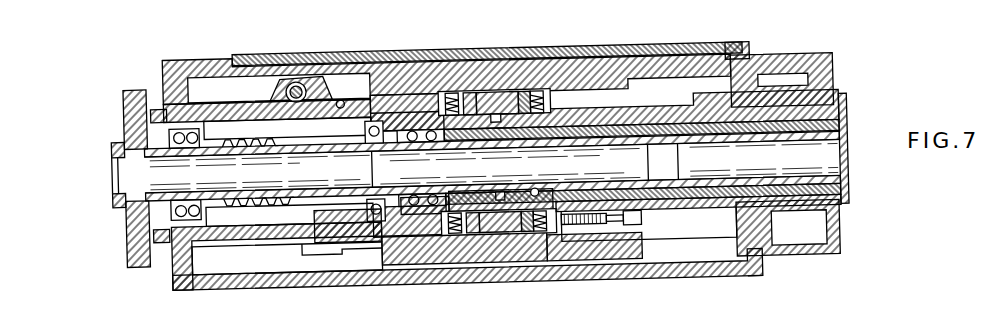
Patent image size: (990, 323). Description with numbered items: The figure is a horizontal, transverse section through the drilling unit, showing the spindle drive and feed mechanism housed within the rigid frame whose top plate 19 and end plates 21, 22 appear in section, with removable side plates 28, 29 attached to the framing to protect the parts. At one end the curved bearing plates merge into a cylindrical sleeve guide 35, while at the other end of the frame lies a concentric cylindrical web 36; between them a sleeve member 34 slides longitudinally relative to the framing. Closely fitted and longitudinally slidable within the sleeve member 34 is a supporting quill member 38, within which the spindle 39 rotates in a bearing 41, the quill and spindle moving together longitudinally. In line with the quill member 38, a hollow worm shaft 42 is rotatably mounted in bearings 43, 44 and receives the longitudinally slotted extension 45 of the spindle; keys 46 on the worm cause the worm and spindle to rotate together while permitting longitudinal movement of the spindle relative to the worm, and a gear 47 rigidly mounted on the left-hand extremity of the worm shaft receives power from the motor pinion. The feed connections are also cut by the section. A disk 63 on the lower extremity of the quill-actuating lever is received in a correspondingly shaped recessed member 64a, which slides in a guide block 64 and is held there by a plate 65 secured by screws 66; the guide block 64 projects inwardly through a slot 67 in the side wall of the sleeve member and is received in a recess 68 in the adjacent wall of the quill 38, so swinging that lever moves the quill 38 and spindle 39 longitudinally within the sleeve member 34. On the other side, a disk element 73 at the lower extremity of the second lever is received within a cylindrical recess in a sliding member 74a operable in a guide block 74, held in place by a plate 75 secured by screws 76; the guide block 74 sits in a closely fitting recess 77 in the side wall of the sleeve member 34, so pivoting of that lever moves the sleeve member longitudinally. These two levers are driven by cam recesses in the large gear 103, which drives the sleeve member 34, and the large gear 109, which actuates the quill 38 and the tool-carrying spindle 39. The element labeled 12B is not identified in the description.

The pin 12B is at (298, 78).
The top plate 19 is at (748, 322).
The end plate 21 is at (843, 231).
The end plate 22 is at (165, 84).
The side plate 28 is at (672, 280).
The side plate 29 is at (738, 47).
The sleeve member 34 is at (644, 114).
The cylindrical sleeve guide 35 is at (785, 85).
The cylindrical web 36 is at (261, 243).
The supporting quill member 38 is at (843, 120).
The spindle 39 is at (630, 170).
The bearing 41 is at (436, 151).
The hollow worm shaft 42 is at (298, 138).
The bearing 43 is at (370, 137).
The bearing 44 is at (207, 206).
The longitudinally slotted extension 45 is at (304, 174).
The keys 46 is at (354, 160).
The gear 47 is at (132, 246).
The disk 63 is at (518, 233).
The guide block 64 is at (428, 265).
The recessed member 64a is at (525, 235).
The plate 65 is at (470, 233).
The screws 66 is at (452, 233).
The slot 67 is at (681, 210).
The recess 68 is at (535, 187).
The disk element 73 is at (500, 92).
The guide block 74 is at (538, 95).
The sliding member 74a is at (522, 96).
The plate 75 is at (472, 92).
The screws 76 is at (450, 92).
The recess 77 is at (550, 114).
The gear 103 is at (610, 68).
The gear 109 is at (593, 250).